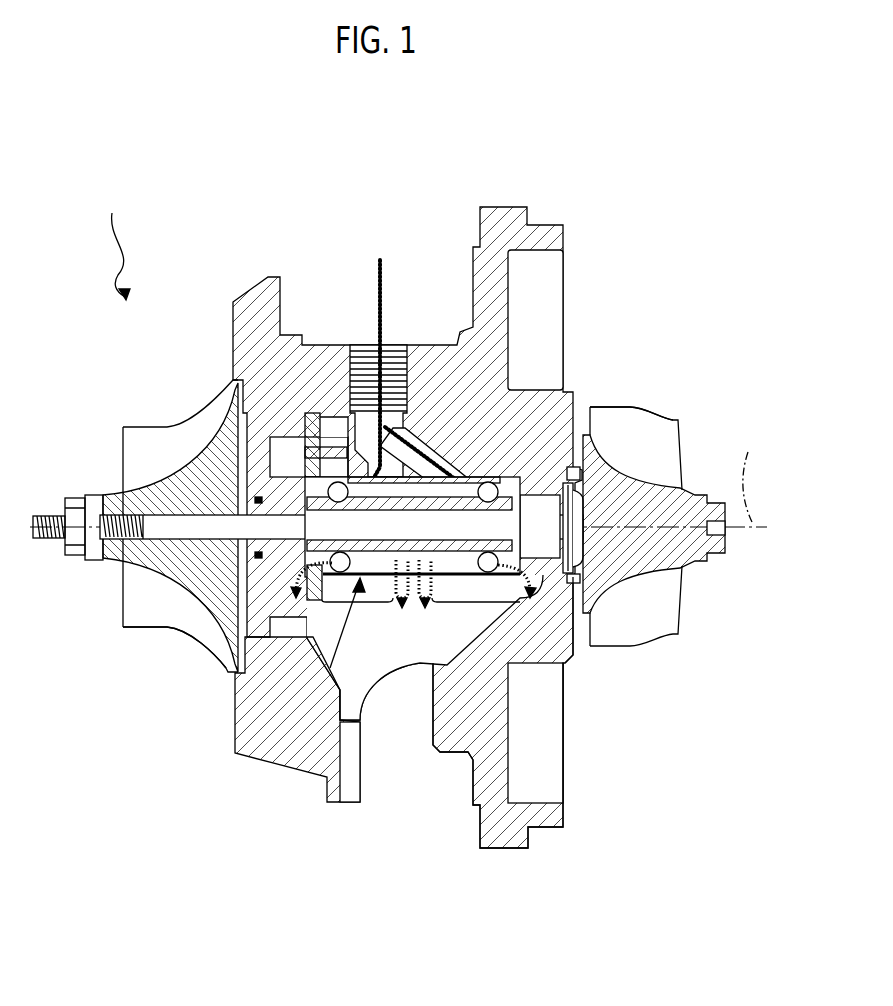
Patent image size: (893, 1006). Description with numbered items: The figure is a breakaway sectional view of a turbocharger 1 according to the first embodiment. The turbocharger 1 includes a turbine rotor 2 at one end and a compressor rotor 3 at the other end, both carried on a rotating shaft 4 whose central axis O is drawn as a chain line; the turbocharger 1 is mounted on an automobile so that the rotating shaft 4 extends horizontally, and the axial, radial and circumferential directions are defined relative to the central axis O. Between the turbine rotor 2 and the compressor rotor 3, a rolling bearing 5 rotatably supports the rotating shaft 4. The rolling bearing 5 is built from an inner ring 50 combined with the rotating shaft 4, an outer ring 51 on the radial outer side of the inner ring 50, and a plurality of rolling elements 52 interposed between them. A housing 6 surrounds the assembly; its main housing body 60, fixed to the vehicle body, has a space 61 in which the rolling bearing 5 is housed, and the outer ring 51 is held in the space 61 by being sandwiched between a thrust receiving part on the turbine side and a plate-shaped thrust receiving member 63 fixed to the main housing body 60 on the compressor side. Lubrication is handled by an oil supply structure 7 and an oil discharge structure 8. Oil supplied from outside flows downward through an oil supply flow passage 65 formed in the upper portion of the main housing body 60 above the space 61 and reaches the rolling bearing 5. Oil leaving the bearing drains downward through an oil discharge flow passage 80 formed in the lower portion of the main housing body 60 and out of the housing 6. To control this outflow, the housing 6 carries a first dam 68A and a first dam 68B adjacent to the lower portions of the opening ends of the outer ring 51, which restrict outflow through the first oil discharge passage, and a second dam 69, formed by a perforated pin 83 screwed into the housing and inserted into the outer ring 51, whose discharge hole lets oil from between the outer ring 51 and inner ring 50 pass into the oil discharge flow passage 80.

The turbocharger 1 is at (121, 212).
The turbine rotor 2 is at (667, 428).
The compressor rotor 3 is at (133, 427).
The rotating shaft 4 is at (167, 533).
The rolling bearing 5 is at (503, 470).
The housing 6 is at (570, 670).
The oil supply structure 7 is at (403, 343).
The oil discharge structure 8 is at (315, 660).
The inner ring 50 is at (512, 664).
The outer ring 51 is at (490, 590).
The rolling elements 52 is at (268, 455).
The main housing body 60 is at (565, 437).
The space 61 is at (337, 620).
The thrust receiving member 63 is at (268, 535).
The oil supply flow passage 65 is at (360, 428).
The first dam 68A is at (605, 612).
The first dam 68B is at (170, 628).
The second dam 69 is at (417, 603).
The oil discharge flow passage 80 is at (377, 653).
The perforated pin 83 is at (437, 603).
The central axis O is at (751, 473).